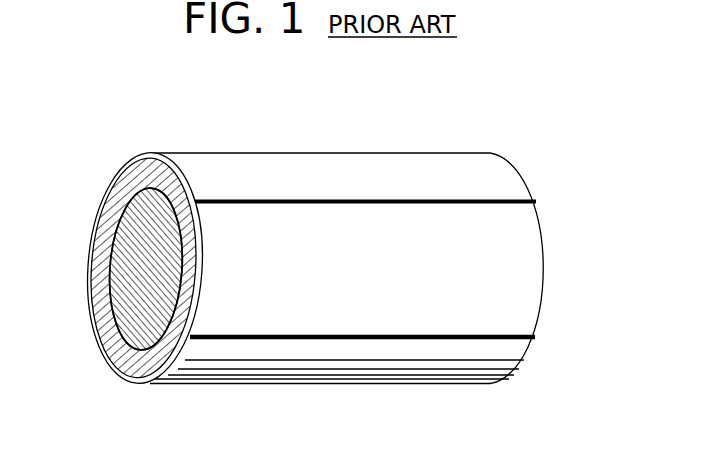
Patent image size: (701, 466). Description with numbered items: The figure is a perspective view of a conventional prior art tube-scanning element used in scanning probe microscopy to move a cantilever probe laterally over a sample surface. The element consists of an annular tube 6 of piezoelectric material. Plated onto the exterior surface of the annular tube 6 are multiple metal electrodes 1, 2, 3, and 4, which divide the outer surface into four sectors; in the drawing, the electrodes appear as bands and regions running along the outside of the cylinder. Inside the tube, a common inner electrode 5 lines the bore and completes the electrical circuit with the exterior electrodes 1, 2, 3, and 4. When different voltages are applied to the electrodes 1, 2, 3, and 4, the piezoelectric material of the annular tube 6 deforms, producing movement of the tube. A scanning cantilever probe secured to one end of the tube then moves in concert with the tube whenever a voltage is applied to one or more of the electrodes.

The metal electrode 1 is at (373, 168).
The metal electrode 2 is at (362, 370).
The metal electrode 3 is at (532, 260).
The metal electrode 4 is at (83, 248).
The common inner electrode 5 is at (117, 277).
The annular tube 6 is at (118, 172).